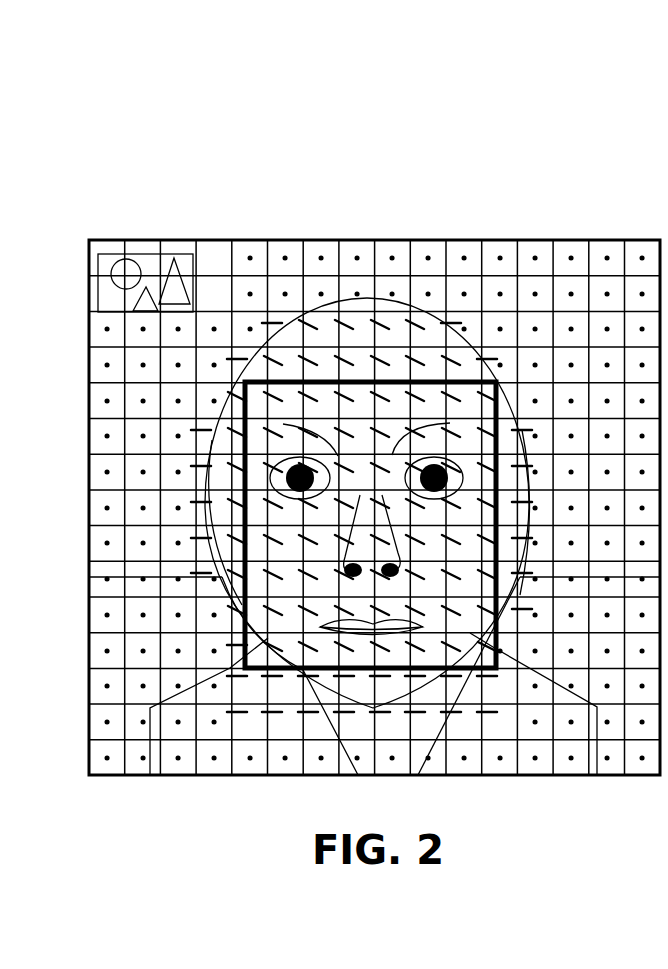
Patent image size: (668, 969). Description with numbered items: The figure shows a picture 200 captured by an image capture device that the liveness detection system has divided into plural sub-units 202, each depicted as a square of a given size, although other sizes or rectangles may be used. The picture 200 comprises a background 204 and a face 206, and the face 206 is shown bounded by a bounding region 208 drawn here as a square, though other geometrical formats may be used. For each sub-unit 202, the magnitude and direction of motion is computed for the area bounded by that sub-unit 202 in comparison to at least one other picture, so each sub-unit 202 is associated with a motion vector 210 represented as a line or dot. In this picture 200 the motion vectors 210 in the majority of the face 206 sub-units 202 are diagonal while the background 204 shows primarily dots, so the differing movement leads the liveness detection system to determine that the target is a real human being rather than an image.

The picture 200 is at (188, 150).
The sub-unit 202 is at (468, 327).
The background 204 is at (560, 364).
The face 206 is at (358, 422).
The bounding region 208 is at (253, 380).
The motion vector 210 is at (383, 327).